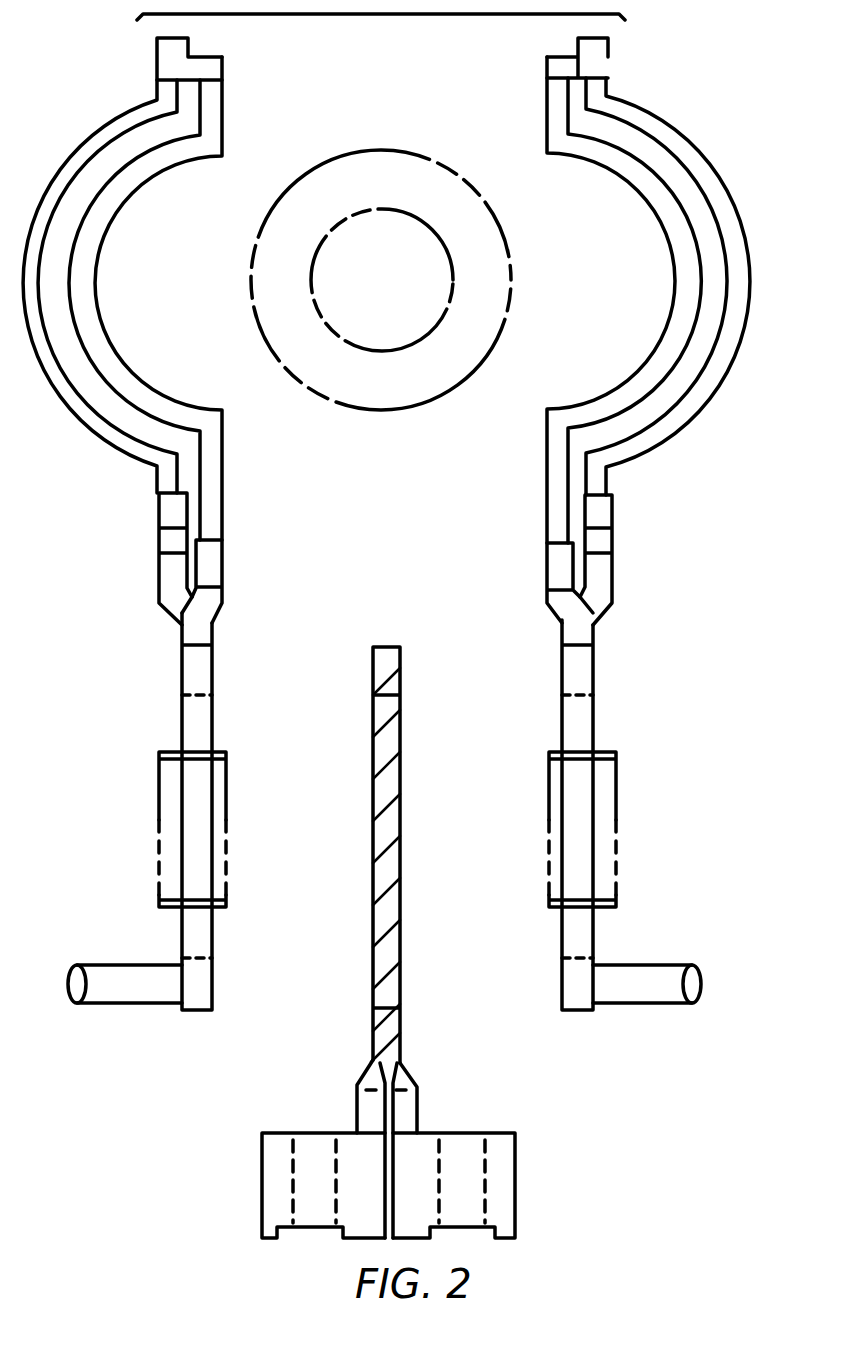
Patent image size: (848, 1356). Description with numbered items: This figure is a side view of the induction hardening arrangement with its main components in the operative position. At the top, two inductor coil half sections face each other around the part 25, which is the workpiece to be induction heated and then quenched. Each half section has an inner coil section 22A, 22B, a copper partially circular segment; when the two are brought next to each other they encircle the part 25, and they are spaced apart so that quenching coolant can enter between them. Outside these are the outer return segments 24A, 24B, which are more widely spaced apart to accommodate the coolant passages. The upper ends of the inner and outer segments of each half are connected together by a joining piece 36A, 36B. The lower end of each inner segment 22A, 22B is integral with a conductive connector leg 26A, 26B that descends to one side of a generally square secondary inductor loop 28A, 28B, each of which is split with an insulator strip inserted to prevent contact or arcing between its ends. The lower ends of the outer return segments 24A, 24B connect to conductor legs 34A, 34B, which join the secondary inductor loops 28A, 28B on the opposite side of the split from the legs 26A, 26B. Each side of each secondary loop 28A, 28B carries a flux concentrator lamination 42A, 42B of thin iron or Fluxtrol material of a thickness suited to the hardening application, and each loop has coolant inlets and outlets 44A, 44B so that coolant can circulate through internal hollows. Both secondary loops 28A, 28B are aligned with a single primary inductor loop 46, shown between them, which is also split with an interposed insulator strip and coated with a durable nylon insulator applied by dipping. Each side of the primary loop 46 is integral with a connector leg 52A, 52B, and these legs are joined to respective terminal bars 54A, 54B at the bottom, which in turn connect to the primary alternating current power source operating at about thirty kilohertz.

The part 25 is at (290, 178).
The joining piece 36A is at (165, 60).
The joining piece 36B is at (602, 60).
The inner coil section 22A is at (98, 313).
The inner coil section 22B is at (674, 261).
The outer return segment 24A is at (98, 435).
The outer return segment 24B is at (704, 402).
The conductive connector leg 26A is at (223, 590).
The conductive connector leg 26B is at (547, 507).
The conductor leg 34A is at (160, 583).
The conductor leg 34B is at (614, 576).
The secondary inductor loop 28A is at (214, 719).
The secondary inductor loop 28B is at (560, 719).
The flux concentrator lamination 42A is at (165, 803).
The flux concentrator lamination 42B is at (616, 808).
The coolant inlets and outlets 44A is at (110, 963).
The coolant inlets and outlets 44B is at (645, 963).
The primary inductor loop 46 is at (372, 866).
The connector leg 52A is at (357, 1093).
The connector leg 52B is at (417, 1103).
The terminal bar 54A is at (262, 1168).
The terminal bar 54B is at (517, 1175).